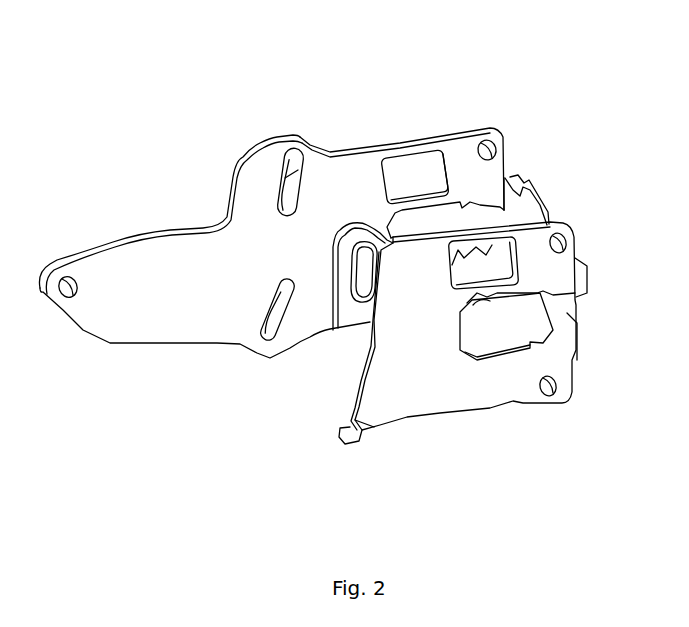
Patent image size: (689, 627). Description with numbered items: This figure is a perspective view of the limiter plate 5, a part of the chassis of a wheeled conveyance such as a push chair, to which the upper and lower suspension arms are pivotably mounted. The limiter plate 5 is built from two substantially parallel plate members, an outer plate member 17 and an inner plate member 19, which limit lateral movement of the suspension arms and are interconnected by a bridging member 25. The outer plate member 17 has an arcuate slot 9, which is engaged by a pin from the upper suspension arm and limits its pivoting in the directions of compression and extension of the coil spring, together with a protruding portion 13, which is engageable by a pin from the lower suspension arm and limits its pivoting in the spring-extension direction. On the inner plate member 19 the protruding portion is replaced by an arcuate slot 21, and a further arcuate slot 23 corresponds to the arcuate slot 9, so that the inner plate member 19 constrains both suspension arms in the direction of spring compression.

The limiter plate 5 is at (466, 120).
The arcuate slot 9 is at (360, 287).
The protruding portion 13 is at (343, 444).
The outer plate member 17 is at (407, 417).
The inner plate member 19 is at (238, 164).
The arcuate slot 21 is at (268, 345).
The further arcuate slot 23 is at (300, 142).
The bridging member 25 is at (542, 195).